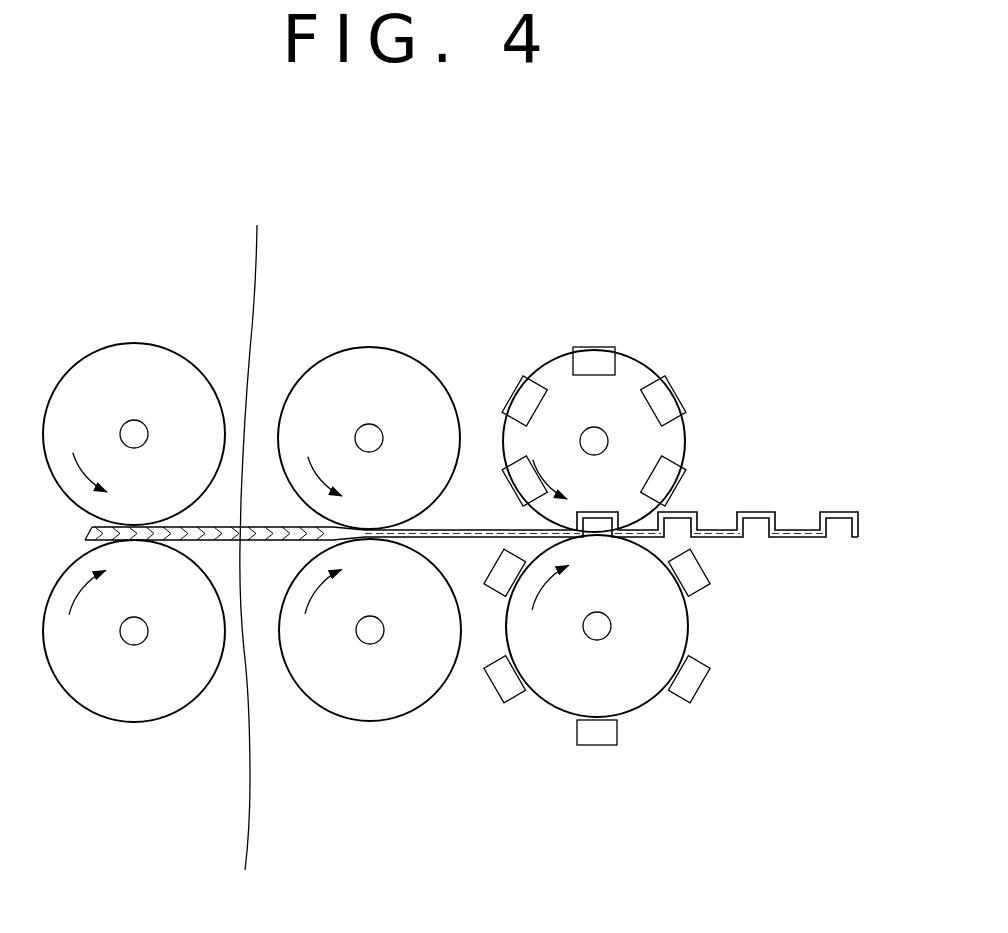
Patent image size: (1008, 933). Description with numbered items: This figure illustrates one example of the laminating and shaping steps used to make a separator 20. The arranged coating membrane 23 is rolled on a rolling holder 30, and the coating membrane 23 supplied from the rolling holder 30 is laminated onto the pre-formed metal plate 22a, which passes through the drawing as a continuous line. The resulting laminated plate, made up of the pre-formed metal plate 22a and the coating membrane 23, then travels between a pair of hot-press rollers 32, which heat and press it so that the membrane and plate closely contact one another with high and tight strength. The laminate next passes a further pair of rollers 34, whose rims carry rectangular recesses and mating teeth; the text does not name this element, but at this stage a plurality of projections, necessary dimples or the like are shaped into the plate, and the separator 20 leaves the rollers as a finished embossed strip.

The separator 20 is at (727, 485).
The pre-formed metal plate 22a is at (261, 734).
The coating membrane 23 is at (263, 362).
The rolling holder 30 is at (162, 347).
The hot-press rollers 32 is at (367, 347).
The embossing roller 34 is at (556, 358).